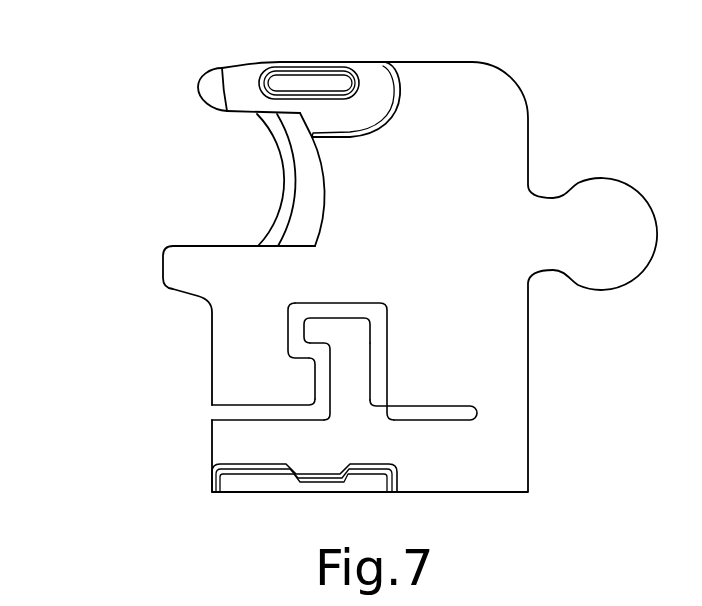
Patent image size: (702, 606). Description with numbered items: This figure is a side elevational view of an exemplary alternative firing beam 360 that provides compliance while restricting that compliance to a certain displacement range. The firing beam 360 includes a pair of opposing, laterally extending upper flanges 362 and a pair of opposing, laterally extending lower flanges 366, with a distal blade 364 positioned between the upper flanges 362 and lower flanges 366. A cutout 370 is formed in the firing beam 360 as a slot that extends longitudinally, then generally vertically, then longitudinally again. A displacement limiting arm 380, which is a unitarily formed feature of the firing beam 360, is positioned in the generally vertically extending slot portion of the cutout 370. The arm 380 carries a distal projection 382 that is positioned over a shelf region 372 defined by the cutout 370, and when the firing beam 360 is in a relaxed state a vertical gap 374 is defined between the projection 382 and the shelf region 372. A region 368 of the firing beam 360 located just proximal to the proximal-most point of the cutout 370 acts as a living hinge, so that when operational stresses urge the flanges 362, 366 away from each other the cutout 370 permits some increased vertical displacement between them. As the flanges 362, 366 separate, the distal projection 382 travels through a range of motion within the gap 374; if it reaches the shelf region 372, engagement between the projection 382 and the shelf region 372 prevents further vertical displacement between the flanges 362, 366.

The firing beam 360 is at (345, 277).
The upper flanges 362 is at (313, 82).
The distal blade 364 is at (282, 186).
The lower flanges 366 is at (270, 483).
The living hinge region 368 is at (492, 396).
The cutout 370 is at (206, 431).
The shelf region 372 is at (308, 349).
The vertical gap 374 is at (227, 339).
The displacement limiting arm 380 is at (395, 340).
The distal projection 382 is at (359, 302).